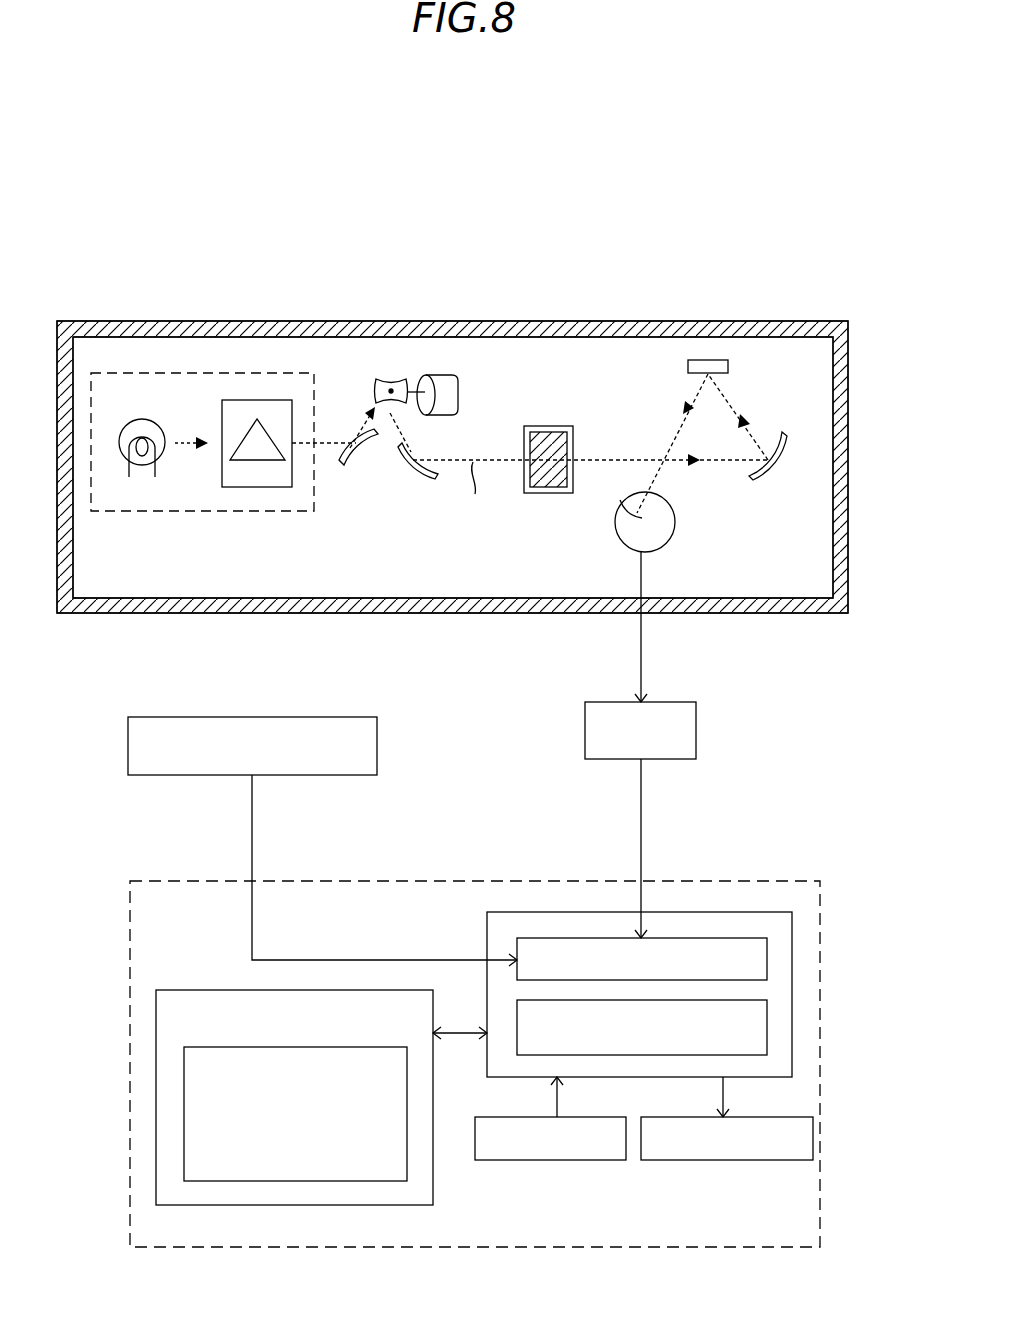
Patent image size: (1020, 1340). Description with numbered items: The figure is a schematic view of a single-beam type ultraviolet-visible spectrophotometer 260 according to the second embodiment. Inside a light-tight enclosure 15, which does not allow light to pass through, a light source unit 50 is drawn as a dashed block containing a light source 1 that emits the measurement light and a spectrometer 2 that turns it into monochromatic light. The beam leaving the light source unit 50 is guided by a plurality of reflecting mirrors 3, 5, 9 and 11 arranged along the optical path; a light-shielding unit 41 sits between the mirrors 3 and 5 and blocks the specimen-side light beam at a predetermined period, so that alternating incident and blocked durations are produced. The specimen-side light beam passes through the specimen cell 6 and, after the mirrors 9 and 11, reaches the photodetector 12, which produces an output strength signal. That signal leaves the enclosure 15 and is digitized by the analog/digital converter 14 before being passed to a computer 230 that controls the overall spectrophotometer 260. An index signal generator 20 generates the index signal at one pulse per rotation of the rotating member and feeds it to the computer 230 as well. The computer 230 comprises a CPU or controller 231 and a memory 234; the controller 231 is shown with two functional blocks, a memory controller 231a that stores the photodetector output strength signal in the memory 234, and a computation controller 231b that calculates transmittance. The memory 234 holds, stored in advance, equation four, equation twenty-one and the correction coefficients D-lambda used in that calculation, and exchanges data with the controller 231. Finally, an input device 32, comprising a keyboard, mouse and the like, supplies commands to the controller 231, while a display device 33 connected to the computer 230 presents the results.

The ultraviolet-visible spectrophotometer 260 is at (451, 196).
The light source 1 is at (143, 419).
The light source unit 50 is at (200, 373).
The spectrometer 2 is at (263, 400).
The light-shielding unit 41 is at (394, 378).
The enclosure 15 is at (542, 321).
The reflecting mirror 11 is at (709, 360).
The reflecting mirror 3 is at (363, 459).
The reflecting mirror 5 is at (409, 473).
The specimen cell 6 is at (548, 494).
The reflecting mirror 9 is at (775, 470).
The photodetector 12 is at (667, 548).
The index signal generator 20 is at (148, 716).
The analog/digital (A/D) converter 14 is at (696, 731).
The computer 230 is at (130, 906).
The CPU (controller) 231 is at (750, 911).
The memory controller 231a is at (768, 958).
The computation controller 231b is at (768, 1021).
The memory 234 is at (156, 1083).
The input device 32 is at (549, 1161).
The display device 33 is at (718, 1161).